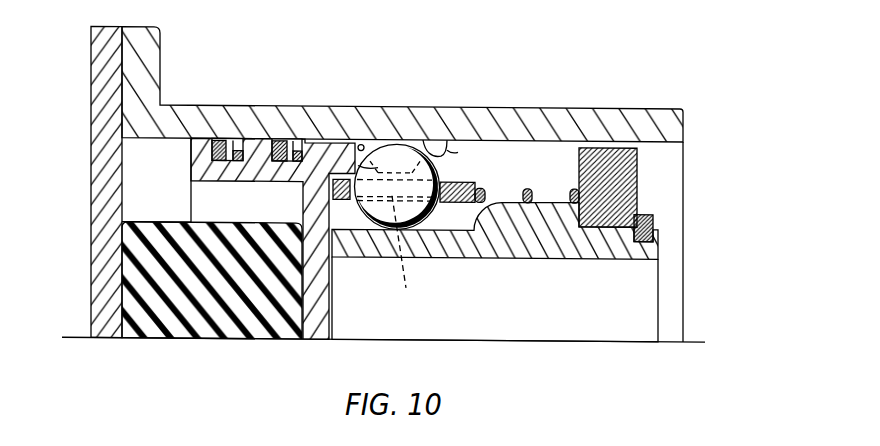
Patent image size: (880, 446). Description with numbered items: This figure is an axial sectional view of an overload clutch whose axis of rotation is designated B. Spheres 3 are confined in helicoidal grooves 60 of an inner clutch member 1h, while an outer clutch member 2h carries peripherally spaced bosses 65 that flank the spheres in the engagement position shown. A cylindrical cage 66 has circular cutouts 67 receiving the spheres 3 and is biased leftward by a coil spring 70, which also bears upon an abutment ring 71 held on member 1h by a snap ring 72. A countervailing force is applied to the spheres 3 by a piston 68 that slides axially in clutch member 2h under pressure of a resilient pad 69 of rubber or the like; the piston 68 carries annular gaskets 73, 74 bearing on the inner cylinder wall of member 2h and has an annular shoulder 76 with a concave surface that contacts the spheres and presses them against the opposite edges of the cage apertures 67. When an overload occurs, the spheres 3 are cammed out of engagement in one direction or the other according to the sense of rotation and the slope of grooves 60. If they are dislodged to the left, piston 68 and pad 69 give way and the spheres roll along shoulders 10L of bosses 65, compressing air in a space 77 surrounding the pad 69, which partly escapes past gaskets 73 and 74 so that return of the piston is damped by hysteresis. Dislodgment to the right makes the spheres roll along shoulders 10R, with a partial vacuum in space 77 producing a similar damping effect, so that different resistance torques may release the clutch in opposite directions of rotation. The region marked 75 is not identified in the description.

The inner clutch member 1h is at (635, 258).
The outer clutch member 2h is at (604, 108).
The spheres 3 is at (436, 208).
The shoulders of bosses 10L is at (372, 165).
The shoulders of bosses 10R is at (455, 148).
The helicoidal grooves 60 is at (470, 230).
The bosses 65 is at (424, 140).
The cylindrical cage 66 is at (462, 180).
The circular cutouts 67 is at (403, 252).
The piston 68 is at (323, 152).
The resilient pad 69 is at (220, 315).
The coil spring 70 is at (528, 186).
The abutment ring 71 is at (628, 162).
The snap ring 72 is at (643, 217).
The annular gasket 73 is at (222, 142).
The annular gasket 74 is at (282, 142).
The chamber 75 is at (161, 139).
The annular shoulder 76 is at (378, 166).
The space 77 is at (135, 188).
The axis of rotation B is at (70, 339).